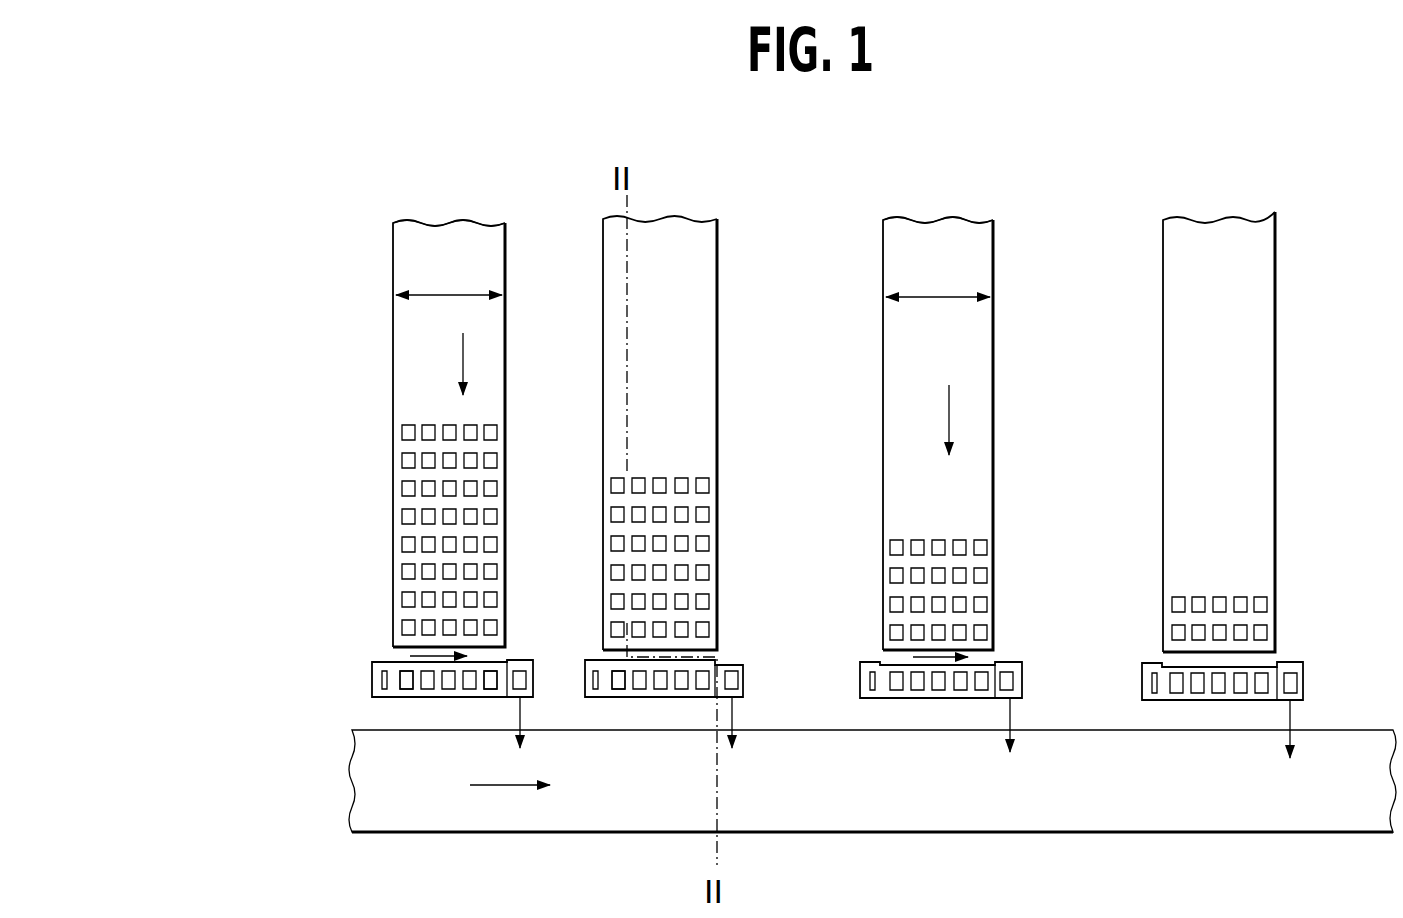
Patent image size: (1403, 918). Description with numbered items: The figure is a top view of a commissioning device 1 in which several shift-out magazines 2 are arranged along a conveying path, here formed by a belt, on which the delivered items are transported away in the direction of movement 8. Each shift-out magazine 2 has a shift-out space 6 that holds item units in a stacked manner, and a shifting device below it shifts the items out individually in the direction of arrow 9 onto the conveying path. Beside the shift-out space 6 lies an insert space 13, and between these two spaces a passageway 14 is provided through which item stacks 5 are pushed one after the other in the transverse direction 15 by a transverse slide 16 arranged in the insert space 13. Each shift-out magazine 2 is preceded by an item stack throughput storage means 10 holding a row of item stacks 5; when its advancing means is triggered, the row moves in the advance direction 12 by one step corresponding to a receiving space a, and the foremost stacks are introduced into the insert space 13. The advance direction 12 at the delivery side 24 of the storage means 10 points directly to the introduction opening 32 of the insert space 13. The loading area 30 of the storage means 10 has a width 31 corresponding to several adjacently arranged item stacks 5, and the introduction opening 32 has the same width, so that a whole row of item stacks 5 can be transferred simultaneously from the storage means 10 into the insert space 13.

The commissioning device 1 is at (282, 583).
The shift-out magazine 2 is at (375, 695).
The item stack 5 is at (492, 522).
The shift-out space 6 is at (518, 668).
The direction of movement 8 is at (515, 785).
The arrow (shifting-out direction) 9 is at (524, 745).
The item stack throughput storage means 10 is at (400, 390).
The advance direction 12 is at (461, 385).
The insert space 13 is at (410, 700).
The passageway 14 is at (497, 690).
The transverse direction 15 is at (435, 655).
The transverse slide 16 is at (382, 684).
The delivery side 24 is at (505, 646).
The loading area 30 is at (416, 318).
The width 31 is at (457, 264).
The introduction opening 32 is at (400, 663).
The receiving space a is at (380, 490).